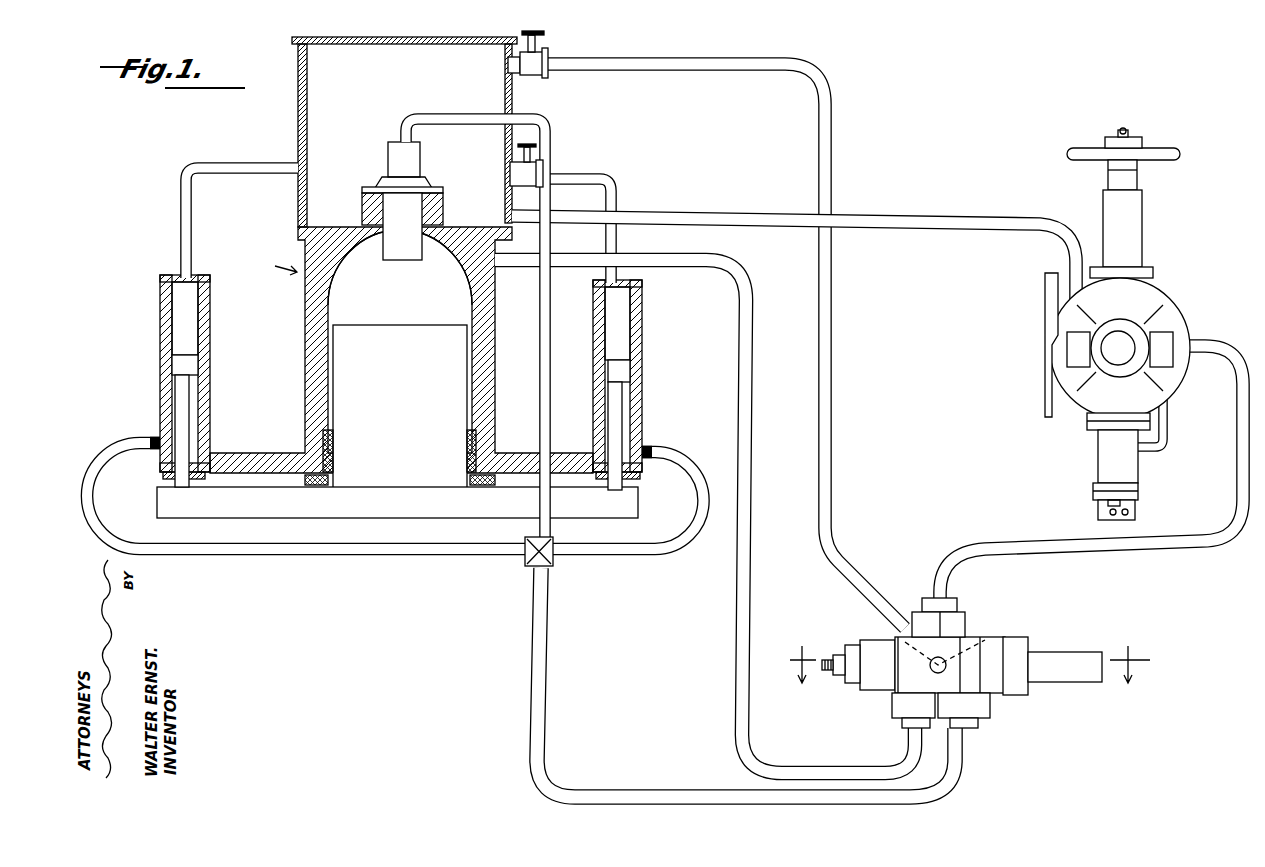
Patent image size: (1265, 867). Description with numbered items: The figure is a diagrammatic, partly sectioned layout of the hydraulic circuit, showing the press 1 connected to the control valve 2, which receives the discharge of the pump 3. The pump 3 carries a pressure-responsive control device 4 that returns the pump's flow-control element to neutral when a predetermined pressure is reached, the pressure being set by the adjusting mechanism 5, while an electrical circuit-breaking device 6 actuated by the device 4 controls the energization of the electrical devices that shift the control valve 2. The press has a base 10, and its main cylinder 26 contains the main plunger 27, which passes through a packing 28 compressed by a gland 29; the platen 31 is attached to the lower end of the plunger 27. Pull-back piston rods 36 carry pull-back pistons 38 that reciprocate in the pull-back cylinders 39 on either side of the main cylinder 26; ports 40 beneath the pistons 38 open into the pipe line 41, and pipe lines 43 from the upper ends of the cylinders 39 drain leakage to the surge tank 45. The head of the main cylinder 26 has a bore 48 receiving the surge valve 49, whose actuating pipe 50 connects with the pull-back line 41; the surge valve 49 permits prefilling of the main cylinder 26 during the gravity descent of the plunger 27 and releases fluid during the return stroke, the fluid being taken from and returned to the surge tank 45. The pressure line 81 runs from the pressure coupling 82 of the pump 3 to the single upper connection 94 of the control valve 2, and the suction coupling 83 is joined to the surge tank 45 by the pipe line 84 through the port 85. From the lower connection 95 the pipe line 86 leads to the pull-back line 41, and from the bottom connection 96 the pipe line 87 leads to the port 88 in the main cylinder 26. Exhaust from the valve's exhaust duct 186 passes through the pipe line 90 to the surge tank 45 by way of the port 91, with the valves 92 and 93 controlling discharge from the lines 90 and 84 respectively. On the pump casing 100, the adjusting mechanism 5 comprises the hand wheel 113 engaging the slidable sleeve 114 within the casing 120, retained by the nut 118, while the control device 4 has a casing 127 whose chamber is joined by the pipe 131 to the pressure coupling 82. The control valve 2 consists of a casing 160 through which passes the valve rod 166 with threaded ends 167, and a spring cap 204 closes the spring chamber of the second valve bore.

The press 1 is at (277, 269).
The control valve 2 is at (962, 674).
The pump 3 is at (1173, 306).
The pressure-responsive control device 4 is at (1123, 466).
The adjusting mechanism 5 is at (1144, 197).
The electrical circuit-breaking device 6 is at (1144, 512).
The base 10 is at (962, 663).
The main cylinder 26 is at (306, 350).
The main plunger 27 is at (392, 340).
The packing 28 is at (322, 445).
The gland 29 is at (312, 486).
The platen 31 is at (176, 512).
The pull-back piston rods 36 is at (186, 415).
The pull-back pistons 38 is at (198, 366).
The pull-back cylinders 39 is at (200, 338).
The ports 40 is at (158, 440).
The pipe line 41 is at (100, 512).
The pipe lines 43 is at (244, 166).
The surge tank 45 is at (297, 102).
The bore 48 is at (440, 210).
The surge valve 49 is at (410, 167).
The actuating pipe 50 is at (550, 140).
The pressure line 81 is at (1062, 556).
The pressure coupling 82 is at (1170, 340).
The suction coupling 83 is at (1066, 348).
The pipe line 84 is at (962, 220).
The port 85 is at (510, 180).
The pipe line 86 is at (530, 636).
The pipe line 87 is at (748, 290).
The port 88 is at (462, 262).
The pipe line 90 is at (832, 323).
The port 91 is at (508, 64).
The valve 92 is at (548, 53).
The valve 93 is at (545, 184).
The connection 94 is at (958, 622).
The connection 95 is at (980, 713).
The connection 96 is at (905, 722).
The casing 100 is at (1177, 380).
The hand wheel 113 is at (1180, 156).
The slidable sleeve 114 is at (1137, 184).
The nut 118 is at (1128, 133).
The casing 120 is at (1103, 205).
The casing 127 is at (1135, 474).
The pipe 131 is at (1165, 430).
The casing 160 is at (868, 640).
The valve rod 166 is at (840, 680).
The threaded ends 167 is at (838, 656).
The exhaust duct 186 is at (978, 640).
The spring cap 204 is at (1084, 680).